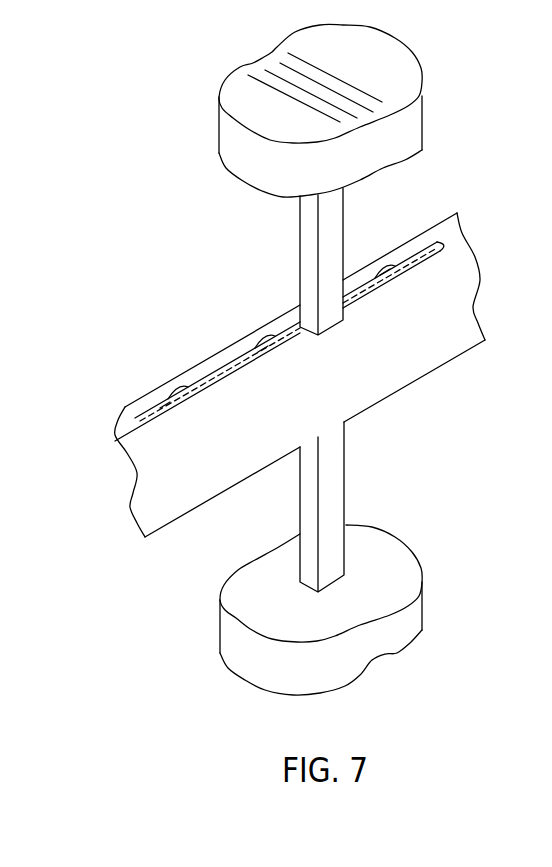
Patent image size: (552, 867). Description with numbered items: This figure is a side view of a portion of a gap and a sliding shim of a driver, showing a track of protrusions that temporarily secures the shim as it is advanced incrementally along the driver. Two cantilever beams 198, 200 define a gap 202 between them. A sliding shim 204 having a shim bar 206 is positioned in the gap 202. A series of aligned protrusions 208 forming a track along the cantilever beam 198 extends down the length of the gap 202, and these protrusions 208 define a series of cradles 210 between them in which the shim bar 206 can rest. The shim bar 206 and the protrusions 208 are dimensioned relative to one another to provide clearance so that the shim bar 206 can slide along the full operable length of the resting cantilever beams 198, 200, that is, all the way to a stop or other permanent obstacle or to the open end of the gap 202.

The cantilever beam 198 is at (167, 484).
The cantilever beam 200 is at (196, 358).
The gap 202 is at (112, 436).
The sliding shim 204 is at (494, 565).
The shim bar 206 is at (337, 482).
The protrusions 208 is at (160, 408).
The cradles 210 is at (182, 403).